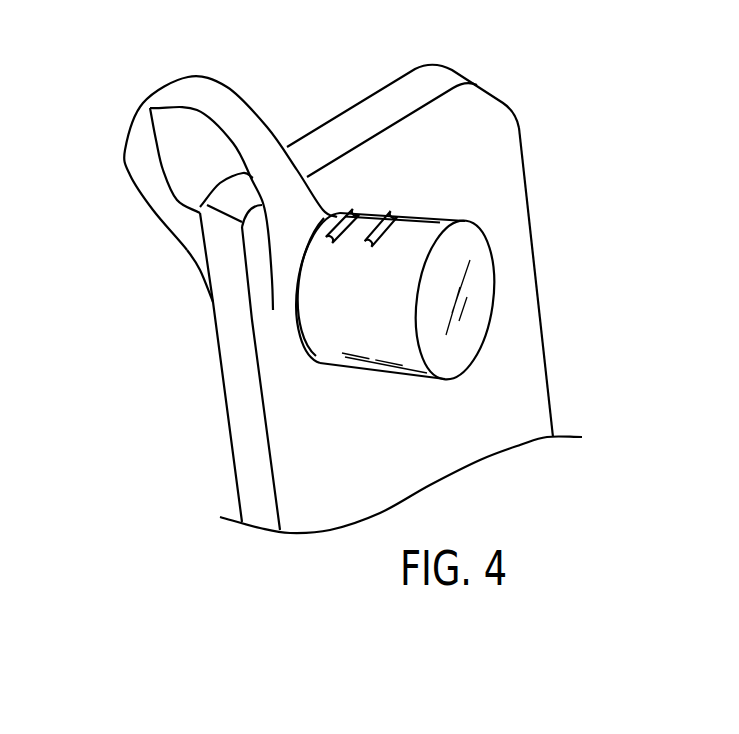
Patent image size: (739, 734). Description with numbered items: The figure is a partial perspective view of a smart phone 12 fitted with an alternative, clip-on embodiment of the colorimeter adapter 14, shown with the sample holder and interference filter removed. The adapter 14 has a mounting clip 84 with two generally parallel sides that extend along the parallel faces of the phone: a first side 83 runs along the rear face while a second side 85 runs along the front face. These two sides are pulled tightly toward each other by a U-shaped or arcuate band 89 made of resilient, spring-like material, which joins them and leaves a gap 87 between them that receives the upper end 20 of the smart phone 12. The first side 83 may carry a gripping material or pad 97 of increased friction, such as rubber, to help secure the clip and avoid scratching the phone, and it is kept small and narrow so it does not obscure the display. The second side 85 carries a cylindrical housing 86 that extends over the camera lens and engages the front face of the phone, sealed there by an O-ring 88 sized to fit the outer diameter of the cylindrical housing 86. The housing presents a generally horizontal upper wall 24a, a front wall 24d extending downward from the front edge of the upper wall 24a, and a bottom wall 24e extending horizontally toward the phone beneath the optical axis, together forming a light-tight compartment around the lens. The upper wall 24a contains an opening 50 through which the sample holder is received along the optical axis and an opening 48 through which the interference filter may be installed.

The smart phone 12 is at (520, 393).
The adapter 14 is at (104, 117).
The upper end 20 is at (420, 147).
The upper wall 24a is at (337, 213).
The front wall 24d is at (475, 317).
The bottom wall 24e is at (380, 370).
The opening 48 is at (387, 220).
The opening 50 is at (345, 210).
The first side 83 is at (200, 245).
The mounting clip 84 is at (283, 98).
The second side 85 is at (280, 280).
The cylindrical housing 86 is at (512, 287).
The gap 87 is at (214, 166).
The O-ring 88 is at (287, 293).
The band 89 is at (228, 103).
The gripping material or pad 97 is at (183, 228).